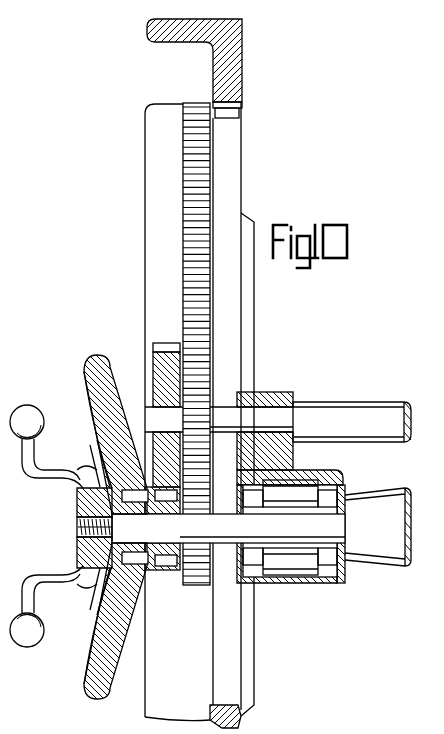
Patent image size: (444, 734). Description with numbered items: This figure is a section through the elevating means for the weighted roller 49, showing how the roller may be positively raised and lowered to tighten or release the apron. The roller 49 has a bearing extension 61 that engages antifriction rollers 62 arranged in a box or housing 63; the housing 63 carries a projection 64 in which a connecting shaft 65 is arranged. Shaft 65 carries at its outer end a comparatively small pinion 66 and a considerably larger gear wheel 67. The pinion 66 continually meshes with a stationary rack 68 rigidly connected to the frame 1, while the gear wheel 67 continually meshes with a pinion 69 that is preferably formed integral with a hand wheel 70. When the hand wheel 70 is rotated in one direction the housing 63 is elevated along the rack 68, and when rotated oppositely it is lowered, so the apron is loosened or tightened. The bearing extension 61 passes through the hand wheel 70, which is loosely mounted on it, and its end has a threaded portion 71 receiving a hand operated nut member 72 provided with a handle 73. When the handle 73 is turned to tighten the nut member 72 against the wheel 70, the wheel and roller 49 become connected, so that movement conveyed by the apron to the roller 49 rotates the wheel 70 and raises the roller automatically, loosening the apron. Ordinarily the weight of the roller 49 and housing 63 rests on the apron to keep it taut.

The frame 1 is at (241, 81).
The weighted roller 49 is at (388, 522).
The bearing extension 61 is at (325, 530).
The antifriction rollers 62 is at (300, 553).
The box or housing 63 is at (328, 482).
The projection 64 is at (291, 395).
The connecting shaft 65 is at (340, 415).
The pinion 66 is at (200, 412).
The gear wheel 67 is at (158, 356).
The stationary rack 68 is at (190, 222).
The pinion 69 is at (177, 566).
The hand wheel 70 is at (97, 650).
The threaded portion 71 is at (80, 526).
The nut member 72 is at (78, 556).
The handle 73 is at (33, 425).